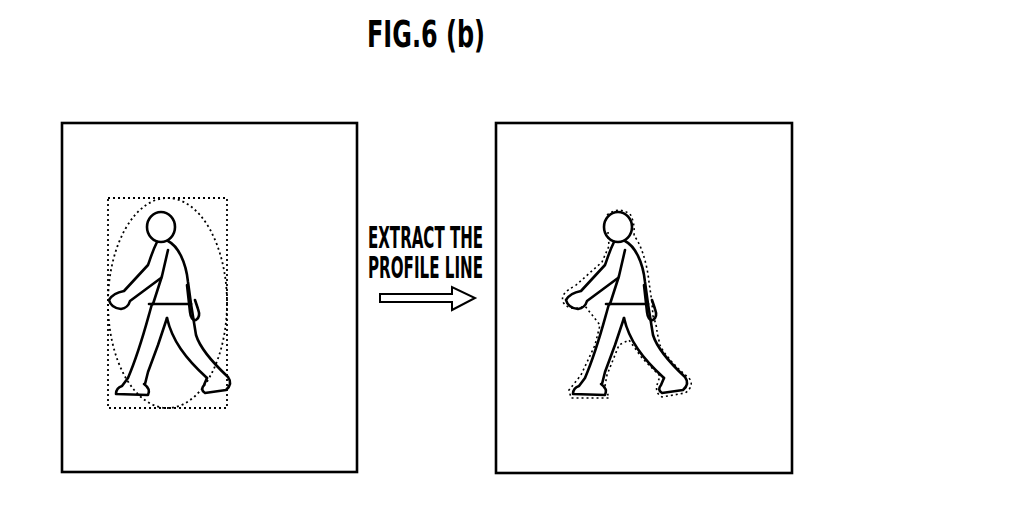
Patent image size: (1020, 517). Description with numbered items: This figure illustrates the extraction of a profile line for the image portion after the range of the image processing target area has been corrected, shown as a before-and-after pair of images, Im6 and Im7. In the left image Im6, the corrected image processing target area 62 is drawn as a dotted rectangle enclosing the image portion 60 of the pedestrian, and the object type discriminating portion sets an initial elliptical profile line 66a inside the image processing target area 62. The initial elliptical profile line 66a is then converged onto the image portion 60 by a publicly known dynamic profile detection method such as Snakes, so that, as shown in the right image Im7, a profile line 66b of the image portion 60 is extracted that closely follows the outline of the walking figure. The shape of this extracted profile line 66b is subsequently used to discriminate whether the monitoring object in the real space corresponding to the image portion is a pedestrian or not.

The input image Im6 is at (290, 123).
The profile line extracted image Im7 is at (723, 123).
The image portion 60 is at (184, 281).
The image processing target area 62 is at (198, 198).
The initial elliptical profile line 66a is at (135, 218).
The profile line 66b is at (637, 235).